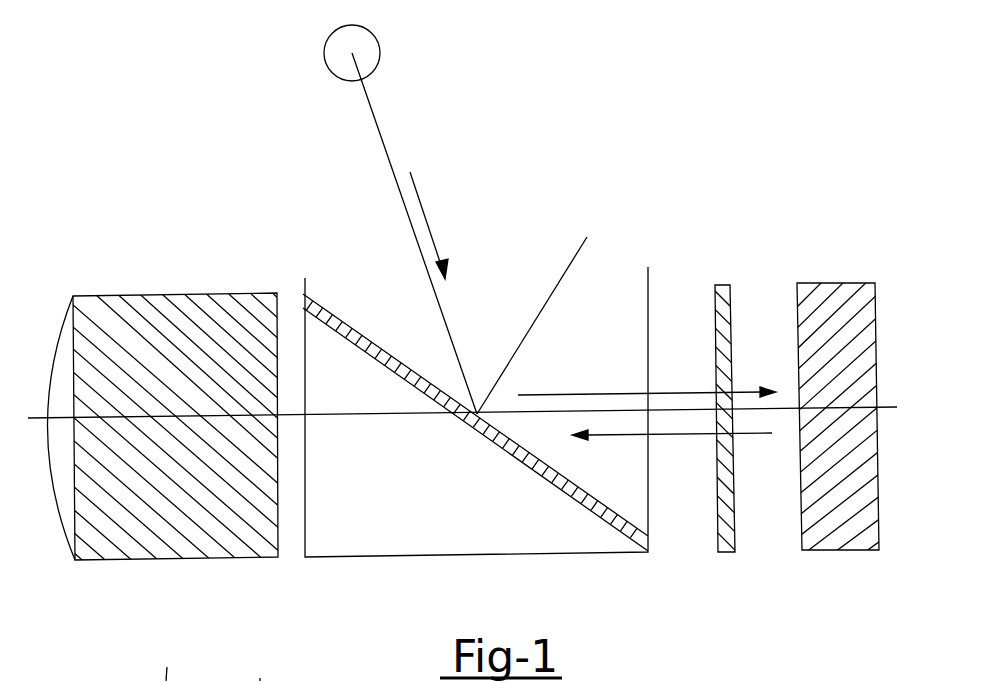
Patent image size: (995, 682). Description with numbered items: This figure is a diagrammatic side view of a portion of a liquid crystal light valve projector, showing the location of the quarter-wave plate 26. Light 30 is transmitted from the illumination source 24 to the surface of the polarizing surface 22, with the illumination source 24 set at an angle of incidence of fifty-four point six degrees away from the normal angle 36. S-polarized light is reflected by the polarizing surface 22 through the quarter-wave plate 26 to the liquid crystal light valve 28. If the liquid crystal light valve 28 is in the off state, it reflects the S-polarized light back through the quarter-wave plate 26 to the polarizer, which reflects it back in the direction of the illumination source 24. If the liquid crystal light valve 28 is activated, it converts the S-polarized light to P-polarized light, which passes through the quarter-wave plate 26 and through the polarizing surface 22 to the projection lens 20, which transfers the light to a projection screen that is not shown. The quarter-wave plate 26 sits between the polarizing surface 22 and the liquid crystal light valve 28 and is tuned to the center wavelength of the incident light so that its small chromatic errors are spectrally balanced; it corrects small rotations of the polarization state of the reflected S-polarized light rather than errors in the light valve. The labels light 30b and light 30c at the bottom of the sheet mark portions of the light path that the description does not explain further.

The objective lens 20 is at (120, 318).
The beam splitter plate 22 is at (337, 310).
The light source 24 is at (373, 43).
The filter 26 is at (722, 281).
The detector 28 is at (833, 283).
The incident light beam 30 is at (417, 190).
The reflected light beam 36 is at (566, 267).
The light beam portion 30b is at (178, 657).
The light beam portion 30c is at (268, 666).